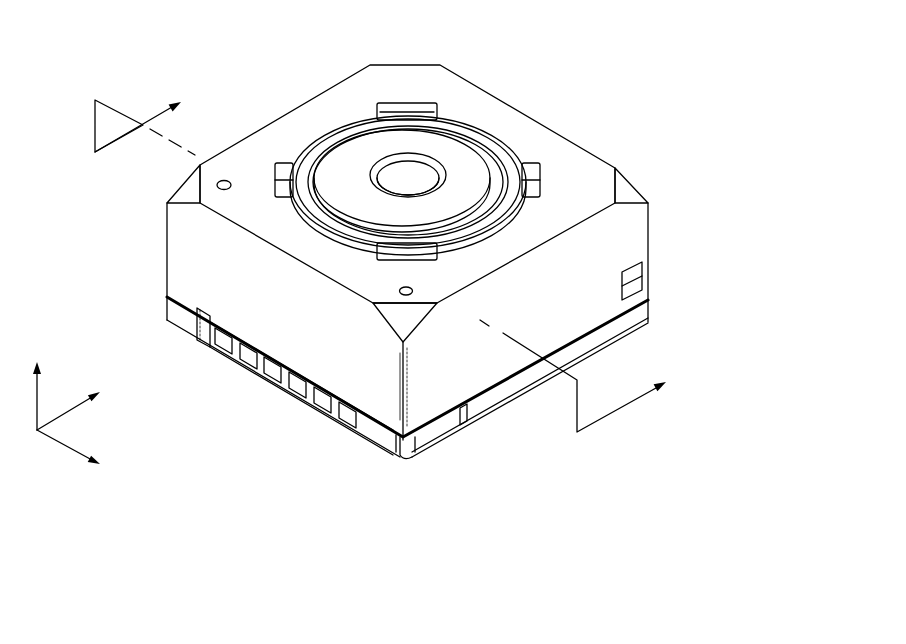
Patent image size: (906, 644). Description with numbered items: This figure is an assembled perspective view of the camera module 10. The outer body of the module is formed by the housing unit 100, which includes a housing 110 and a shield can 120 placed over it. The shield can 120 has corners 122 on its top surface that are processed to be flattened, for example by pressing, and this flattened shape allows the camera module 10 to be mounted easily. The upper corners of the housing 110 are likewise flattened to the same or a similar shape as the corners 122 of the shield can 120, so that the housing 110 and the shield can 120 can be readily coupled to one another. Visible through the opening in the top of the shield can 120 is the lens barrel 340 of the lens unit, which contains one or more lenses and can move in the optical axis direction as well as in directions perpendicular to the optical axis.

The camera module 10 is at (598, 72).
The housing unit 100 is at (757, 238).
The housing 110 is at (640, 312).
The shield can 120 is at (632, 250).
The corners 122 is at (627, 193).
The lens barrel 340 is at (360, 155).